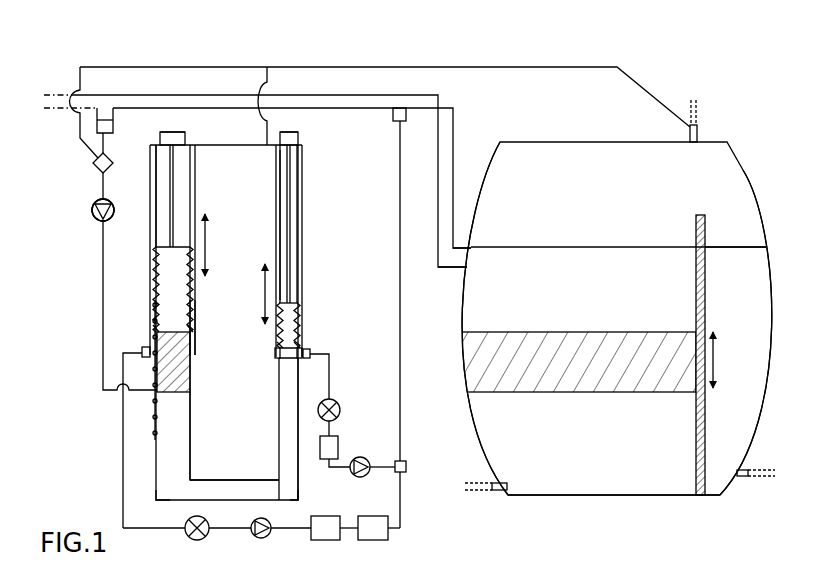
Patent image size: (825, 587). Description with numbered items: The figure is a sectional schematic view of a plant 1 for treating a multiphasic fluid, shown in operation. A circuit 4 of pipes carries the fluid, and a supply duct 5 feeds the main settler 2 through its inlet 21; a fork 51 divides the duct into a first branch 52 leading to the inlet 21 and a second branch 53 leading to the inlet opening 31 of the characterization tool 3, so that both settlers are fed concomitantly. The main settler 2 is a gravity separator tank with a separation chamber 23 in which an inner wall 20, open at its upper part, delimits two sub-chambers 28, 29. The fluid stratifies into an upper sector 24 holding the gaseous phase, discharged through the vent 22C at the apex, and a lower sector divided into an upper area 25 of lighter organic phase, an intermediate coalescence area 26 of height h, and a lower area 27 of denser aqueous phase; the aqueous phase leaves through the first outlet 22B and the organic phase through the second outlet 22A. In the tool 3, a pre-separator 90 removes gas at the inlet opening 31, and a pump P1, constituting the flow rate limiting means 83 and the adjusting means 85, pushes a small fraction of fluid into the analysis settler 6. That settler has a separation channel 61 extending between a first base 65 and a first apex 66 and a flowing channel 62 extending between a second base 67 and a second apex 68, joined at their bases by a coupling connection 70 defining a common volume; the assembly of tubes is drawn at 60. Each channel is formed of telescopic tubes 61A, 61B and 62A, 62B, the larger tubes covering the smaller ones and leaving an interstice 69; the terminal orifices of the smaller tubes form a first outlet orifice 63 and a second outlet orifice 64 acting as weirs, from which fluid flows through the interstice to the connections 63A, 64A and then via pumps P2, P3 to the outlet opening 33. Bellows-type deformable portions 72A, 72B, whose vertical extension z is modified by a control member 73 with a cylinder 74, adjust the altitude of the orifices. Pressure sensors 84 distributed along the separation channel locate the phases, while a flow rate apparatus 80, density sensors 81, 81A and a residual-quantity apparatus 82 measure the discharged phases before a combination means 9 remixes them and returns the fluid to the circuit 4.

The plant for the treatment of a multiphasic fluid 1 is at (95, 55).
The main settler 2 is at (748, 160).
The characterization tool 3 is at (92, 292).
The circuit 4 is at (220, 86).
The multiphasic fluid supply duct 5 is at (156, 98).
The analysis settler 6 is at (145, 469).
The combination means 9 is at (406, 462).
The inner wall 20 is at (698, 490).
The inlet 21 is at (460, 250).
The second outlet 22A is at (745, 478).
The first outlet 22B is at (497, 491).
The vent 22C is at (699, 130).
The separation chamber 23 is at (585, 172).
The upper sector 24 is at (740, 218).
The upper area 25 is at (190, 312).
The intermediate area 26 is at (190, 385).
The lower area 27 is at (186, 428).
The sub-chamber 28 is at (490, 287).
The sub-chamber 29 is at (750, 358).
The inlet opening 31 is at (107, 134).
The outlet opening 33 is at (402, 121).
The fork 51 is at (103, 108).
The first branch 52 is at (247, 97).
The second branch 53 is at (113, 122).
The first cylinder 60 is at (195, 172).
The separation channel 61 is at (195, 352).
The tube of smaller diameter 61A is at (191, 458).
The tube of larger diameter 61B is at (192, 196).
The flowing channel 62 is at (276, 355).
The tube of smaller diameter 62A is at (279, 415).
The tube of larger diameter 62B is at (302, 200).
The first outlet orifice 63 is at (155, 247).
The connection 63A is at (142, 347).
The second outlet orifice 64 is at (300, 300).
The connection 64A is at (310, 350).
The first base 65 is at (157, 501).
The first apex 66 is at (155, 150).
The second base 67 is at (298, 500).
The second apex 68 is at (302, 148).
The interstice 69 is at (190, 330).
The coupling connection 70 is at (245, 500).
The deformable portion 72A is at (190, 285).
The deformable portion 72B is at (279, 320).
The control member 73 is at (186, 132).
The cylinder 74 is at (186, 138).
The flow rate measuring apparatus 80 is at (338, 405).
The density sensor 81 is at (320, 516).
The density sensor 81A is at (338, 440).
The residual quantity measuring apparatus 82 is at (368, 516).
The flow rate limiting means 83 is at (103, 210).
The pressure sensors 84 is at (150, 311).
The flow rate adjusting means 85 is at (92, 213).
The pre-separator 90 is at (93, 163).
The pump P1 is at (114, 207).
The pump P2 is at (270, 536).
The pump P3 is at (366, 459).
The height h is at (719, 360).
The vertical extension z is at (235, 269).